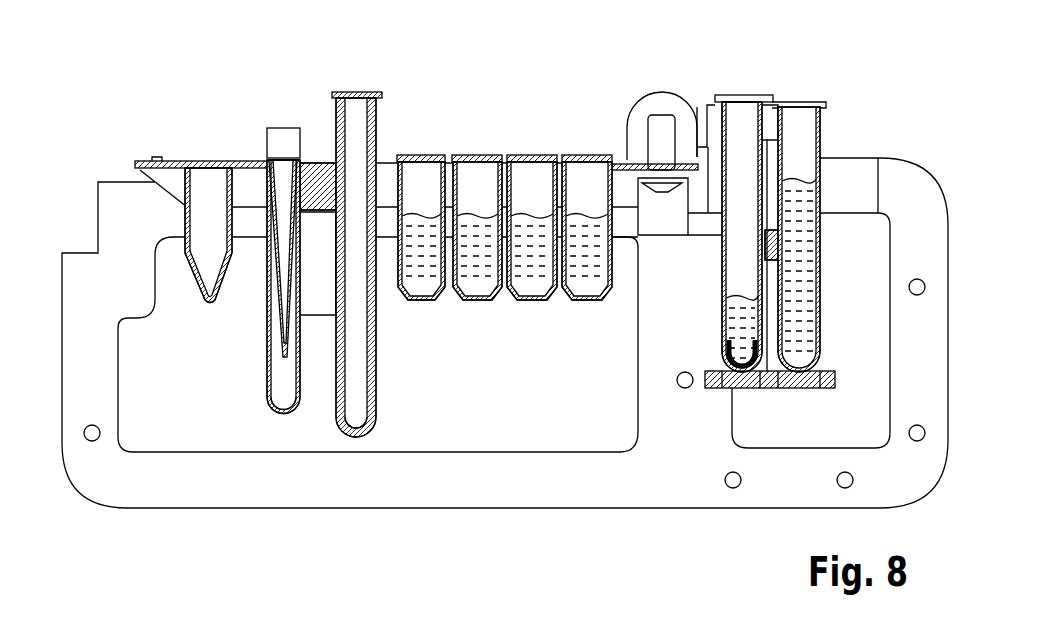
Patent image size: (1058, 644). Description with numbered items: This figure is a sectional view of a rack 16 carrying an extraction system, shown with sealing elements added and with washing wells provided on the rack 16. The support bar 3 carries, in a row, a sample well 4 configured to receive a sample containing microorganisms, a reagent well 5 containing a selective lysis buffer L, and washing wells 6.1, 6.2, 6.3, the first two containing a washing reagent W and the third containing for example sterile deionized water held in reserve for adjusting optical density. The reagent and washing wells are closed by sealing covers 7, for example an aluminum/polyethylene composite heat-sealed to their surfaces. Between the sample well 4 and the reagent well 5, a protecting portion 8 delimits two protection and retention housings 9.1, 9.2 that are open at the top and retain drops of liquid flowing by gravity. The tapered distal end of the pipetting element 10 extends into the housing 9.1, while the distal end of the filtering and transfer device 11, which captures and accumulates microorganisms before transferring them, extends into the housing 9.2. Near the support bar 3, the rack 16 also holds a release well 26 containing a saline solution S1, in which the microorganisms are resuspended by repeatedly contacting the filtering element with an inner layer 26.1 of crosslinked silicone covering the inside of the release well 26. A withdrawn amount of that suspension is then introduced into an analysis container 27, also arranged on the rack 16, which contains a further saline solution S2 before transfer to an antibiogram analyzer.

The rack 16 is at (122, 232).
The sample well 4 is at (213, 181).
The pipetting element 10 is at (267, 138).
The protecting portion 8 is at (268, 309).
The protection and retention housing 9.1 is at (283, 397).
The filtering and transfer device 11 is at (355, 118).
The protection and retention housing 9.2 is at (357, 428).
The reagent well 5 is at (418, 178).
The washing well 6.1 is at (487, 267).
The washing well 6.2 is at (532, 277).
The washing well 6.3 is at (578, 303).
The selective lysis buffer L is at (423, 276).
The washing reagent W is at (523, 277).
The sealing cover 7 is at (428, 157).
The support bar 3 is at (660, 100).
The release well 26 is at (738, 124).
The analysis container 27 is at (795, 118).
The saline solution S1 is at (748, 318).
The saline solution S2 is at (808, 197).
The inner layer 26.1 is at (757, 378).